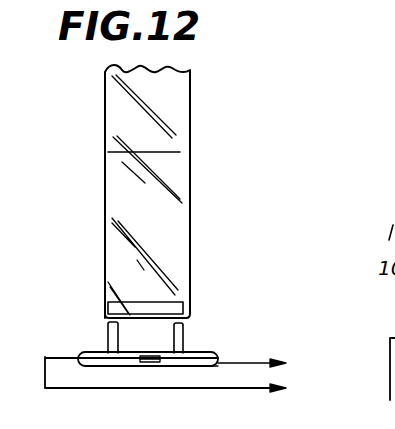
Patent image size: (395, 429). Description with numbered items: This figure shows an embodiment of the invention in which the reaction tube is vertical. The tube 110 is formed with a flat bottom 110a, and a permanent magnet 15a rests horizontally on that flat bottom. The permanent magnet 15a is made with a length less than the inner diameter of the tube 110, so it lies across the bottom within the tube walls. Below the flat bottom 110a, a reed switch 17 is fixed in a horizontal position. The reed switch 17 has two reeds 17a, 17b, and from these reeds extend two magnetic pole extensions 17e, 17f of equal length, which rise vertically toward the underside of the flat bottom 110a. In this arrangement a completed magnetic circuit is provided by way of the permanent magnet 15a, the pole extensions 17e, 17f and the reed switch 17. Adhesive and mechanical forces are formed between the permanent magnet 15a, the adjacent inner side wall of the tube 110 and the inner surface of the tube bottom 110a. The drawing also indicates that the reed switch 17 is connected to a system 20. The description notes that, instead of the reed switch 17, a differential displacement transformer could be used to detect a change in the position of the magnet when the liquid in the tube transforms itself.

The tube 110 is at (190, 163).
The permanent magnet 15a is at (176, 308).
The flat bottom 110a is at (110, 341).
The magnetic pole extension 17e is at (112, 332).
The magnetic pole extension 17f is at (185, 333).
The reed 17a is at (93, 360).
The reed switch 17 is at (148, 366).
The reed 17b is at (190, 368).
The system 20 is at (272, 381).